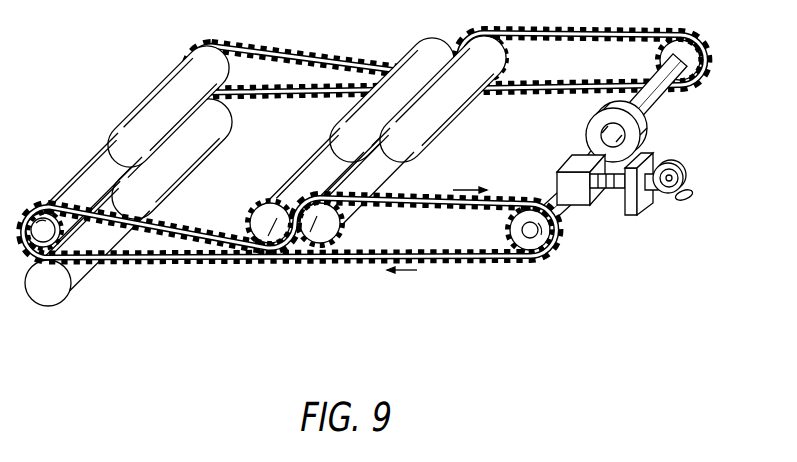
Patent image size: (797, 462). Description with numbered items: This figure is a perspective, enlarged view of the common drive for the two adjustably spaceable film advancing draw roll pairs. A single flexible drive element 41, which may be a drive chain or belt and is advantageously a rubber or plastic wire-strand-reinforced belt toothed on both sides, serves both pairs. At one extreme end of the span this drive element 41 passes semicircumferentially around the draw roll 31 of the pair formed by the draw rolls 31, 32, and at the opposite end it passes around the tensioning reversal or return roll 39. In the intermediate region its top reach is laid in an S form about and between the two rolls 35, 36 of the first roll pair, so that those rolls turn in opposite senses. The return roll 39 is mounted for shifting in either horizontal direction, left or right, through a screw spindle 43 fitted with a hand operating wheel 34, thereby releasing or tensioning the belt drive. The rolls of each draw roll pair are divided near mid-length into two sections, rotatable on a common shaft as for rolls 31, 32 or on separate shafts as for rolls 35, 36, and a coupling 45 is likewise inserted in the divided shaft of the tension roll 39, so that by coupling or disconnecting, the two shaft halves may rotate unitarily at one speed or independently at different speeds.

The draw roll 31 is at (48, 212).
The draw roll 32 is at (53, 297).
The hand wheel 34 is at (663, 205).
The draw roll 35 is at (278, 237).
The draw roll 36 is at (306, 231).
The tensioning reversal or return roll 39 is at (528, 247).
The flexible drive element 41 is at (472, 263).
The screw spindle 43 is at (613, 189).
The coupling 45 is at (641, 124).